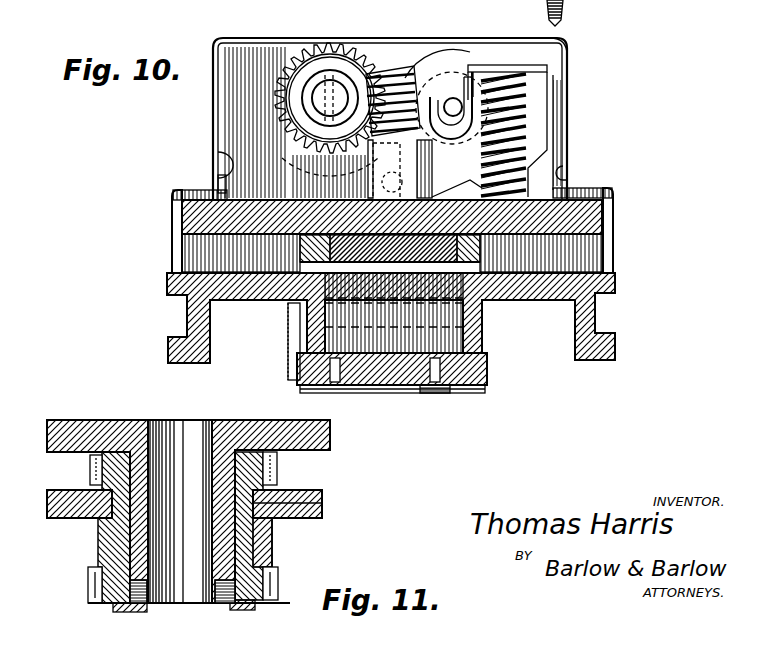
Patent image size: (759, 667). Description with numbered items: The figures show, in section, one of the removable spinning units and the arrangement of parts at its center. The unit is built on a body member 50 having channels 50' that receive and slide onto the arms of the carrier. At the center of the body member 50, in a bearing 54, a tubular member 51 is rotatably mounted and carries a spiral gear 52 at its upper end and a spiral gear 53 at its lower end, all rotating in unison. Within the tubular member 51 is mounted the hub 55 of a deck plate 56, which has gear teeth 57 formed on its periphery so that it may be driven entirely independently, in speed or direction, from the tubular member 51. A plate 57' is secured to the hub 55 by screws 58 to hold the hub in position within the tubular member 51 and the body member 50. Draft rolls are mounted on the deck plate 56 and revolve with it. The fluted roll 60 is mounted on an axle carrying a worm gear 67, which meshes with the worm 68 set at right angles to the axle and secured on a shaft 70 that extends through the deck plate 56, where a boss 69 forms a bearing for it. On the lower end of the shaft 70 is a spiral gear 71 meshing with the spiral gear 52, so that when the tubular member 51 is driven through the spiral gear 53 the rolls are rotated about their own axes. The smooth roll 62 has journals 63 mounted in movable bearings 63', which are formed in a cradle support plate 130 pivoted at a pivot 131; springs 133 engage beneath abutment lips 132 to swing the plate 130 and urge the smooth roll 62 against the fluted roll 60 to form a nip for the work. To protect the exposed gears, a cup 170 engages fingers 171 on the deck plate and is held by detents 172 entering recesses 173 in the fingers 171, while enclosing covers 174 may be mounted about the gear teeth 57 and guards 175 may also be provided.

In FIG. 10, the cup 170 is at (213, 80).
In FIG. 10, the fluted roll 60 is at (323, 57).
In FIG. 10, the worm gear 67 is at (312, 68).
In FIG. 10, the worm 68 is at (397, 72).
In FIG. 10, the journals 63 is at (458, 61).
In FIG. 10, the smooth roll 62 is at (480, 77).
In FIG. 10, the movable bearings 63' is at (500, 49).
In FIG. 10, the shaft 70 is at (393, 180).
In FIG. 10, the pivot 131 is at (430, 152).
In FIG. 10, the cradle support plate 130 is at (540, 100).
In FIG. 10, the springs 133 is at (540, 147).
In FIG. 10, the abutment lips 132 is at (568, 43).
In FIG. 10, the boss 69 is at (527, 127).
In FIG. 10, the recesses 173 is at (218, 150).
In FIG. 10, the detents 172 is at (213, 183).
In FIG. 10, the fingers 171 is at (173, 191).
In FIG. 10, the enclosing covers 174 is at (172, 220).
In FIG. 10, the gear teeth 57 is at (422, 216).
In FIG. 10, the spiral gear 52 is at (480, 248).
In FIG. 11, the spiral gear 52 is at (277, 467).
In FIG. 10, the spiral gear 71 is at (485, 250).
In FIG. 10, the body member 50 is at (391, 318).
In FIG. 11, the body member 50 is at (299, 542).
In FIG. 10, the channels 50' is at (392, 333).
In FIG. 10, the guards 175 is at (288, 340).
In FIG. 10, the hub 55 is at (473, 387).
In FIG. 11, the hub 55 is at (227, 463).
In FIG. 10, the plate 57' is at (392, 408).
In FIG. 11, the plate 57' is at (198, 611).
In FIG. 10, the screws 58 is at (437, 393).
In FIG. 11, the screws 58 is at (210, 600).
In FIG. 11, the deck plate 56 is at (317, 432).
In FIG. 11, the bearing 54 is at (322, 498).
In FIG. 11, the tubular member 51 is at (255, 530).
In FIG. 11, the spiral gear 53 is at (278, 583).